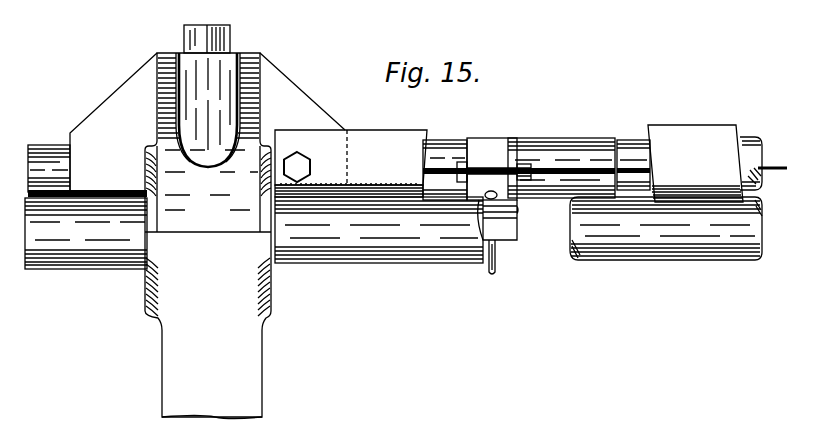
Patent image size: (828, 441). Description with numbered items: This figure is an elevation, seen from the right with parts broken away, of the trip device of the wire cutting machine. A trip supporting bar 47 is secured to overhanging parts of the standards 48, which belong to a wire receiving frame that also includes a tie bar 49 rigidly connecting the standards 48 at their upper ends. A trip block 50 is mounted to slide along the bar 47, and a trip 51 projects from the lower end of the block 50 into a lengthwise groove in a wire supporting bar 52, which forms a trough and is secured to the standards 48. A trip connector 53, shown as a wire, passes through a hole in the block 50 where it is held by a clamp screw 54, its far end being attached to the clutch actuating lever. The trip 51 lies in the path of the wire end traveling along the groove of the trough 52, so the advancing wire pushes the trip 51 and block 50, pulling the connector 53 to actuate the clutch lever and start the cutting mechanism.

The trip supporting bar 47 is at (623, 141).
The standards 48 is at (251, 335).
The tie bar 49 is at (690, 133).
The trip block 50 is at (548, 141).
The trip 51 is at (516, 210).
The wire supporting bar 52 is at (437, 255).
The trip connector 53 is at (761, 167).
The clamp screw 54 is at (497, 265).